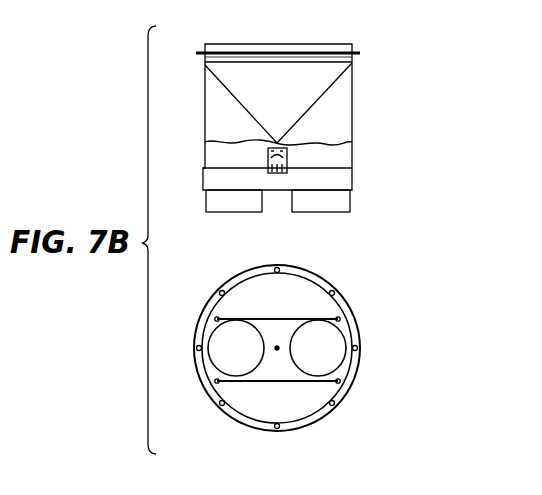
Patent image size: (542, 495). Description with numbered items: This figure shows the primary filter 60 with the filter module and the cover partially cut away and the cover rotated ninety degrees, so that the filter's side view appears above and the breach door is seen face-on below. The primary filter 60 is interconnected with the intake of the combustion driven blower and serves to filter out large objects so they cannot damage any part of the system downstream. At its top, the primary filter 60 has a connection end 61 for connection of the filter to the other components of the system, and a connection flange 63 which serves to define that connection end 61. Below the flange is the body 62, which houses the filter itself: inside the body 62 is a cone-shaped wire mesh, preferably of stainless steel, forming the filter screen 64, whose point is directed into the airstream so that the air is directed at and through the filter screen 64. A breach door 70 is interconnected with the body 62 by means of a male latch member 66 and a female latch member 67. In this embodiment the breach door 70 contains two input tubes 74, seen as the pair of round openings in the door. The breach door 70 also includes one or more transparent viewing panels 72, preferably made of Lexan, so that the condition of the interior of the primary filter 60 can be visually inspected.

The primary filter 60 is at (410, 123).
The connection end 61 is at (352, 51).
The body 62 is at (352, 158).
The connection flange 63 is at (352, 57).
The filter screen 64 is at (307, 117).
The male latch member 66 is at (274, 174).
The female latch member 67 is at (272, 266).
The breach door 70 is at (349, 303).
The transparent viewing panels 72 is at (297, 290).
The input tubes 74 is at (351, 371).